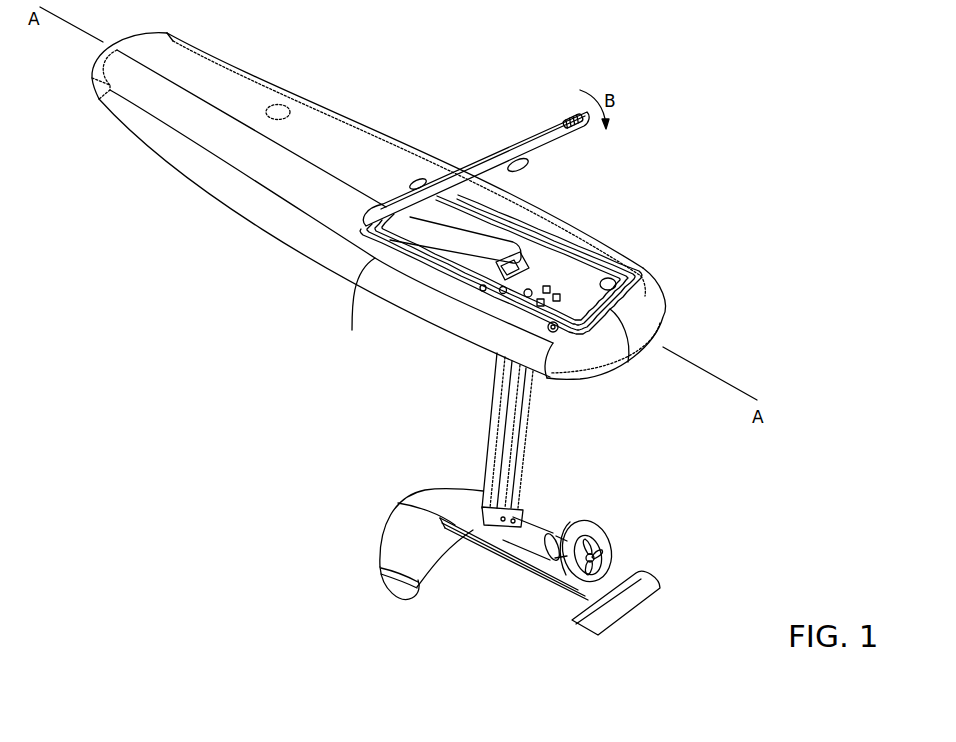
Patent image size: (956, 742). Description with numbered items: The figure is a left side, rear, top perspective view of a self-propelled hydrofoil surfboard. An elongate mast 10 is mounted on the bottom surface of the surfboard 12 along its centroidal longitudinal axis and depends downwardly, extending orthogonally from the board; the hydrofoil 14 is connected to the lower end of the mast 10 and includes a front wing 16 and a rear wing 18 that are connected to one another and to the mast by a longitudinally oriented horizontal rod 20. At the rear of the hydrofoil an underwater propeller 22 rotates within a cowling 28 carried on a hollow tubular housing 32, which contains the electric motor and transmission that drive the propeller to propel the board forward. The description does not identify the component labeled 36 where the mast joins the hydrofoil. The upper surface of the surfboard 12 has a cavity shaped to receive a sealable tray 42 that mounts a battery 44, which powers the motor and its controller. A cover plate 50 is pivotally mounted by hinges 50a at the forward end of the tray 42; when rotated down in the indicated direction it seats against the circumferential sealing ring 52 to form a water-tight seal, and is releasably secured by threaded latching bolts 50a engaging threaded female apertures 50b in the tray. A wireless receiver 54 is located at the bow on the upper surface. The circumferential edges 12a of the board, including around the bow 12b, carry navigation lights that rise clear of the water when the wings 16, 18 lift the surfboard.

The mast 10 is at (526, 447).
The surfboard 12 is at (371, 206).
The circumferential edges 12a is at (186, 178).
The bow 12b is at (90, 73).
The hydrofoil 14 is at (518, 561).
The front wing 16 is at (382, 528).
The rear wing 18 is at (653, 592).
The horizontal rod 20 is at (550, 588).
The propeller 22 is at (603, 560).
The cowling 28 is at (588, 523).
The tubular housing 32 is at (543, 523).
The mast clamp 36 is at (487, 506).
The tray 42 is at (548, 262).
The battery 44 is at (450, 238).
The cover plate 50 is at (467, 170).
The hinges 50a is at (574, 114).
The threaded female apertures 50b is at (615, 279).
The sealing ring 52 is at (664, 311).
The receiver 54 is at (279, 105).